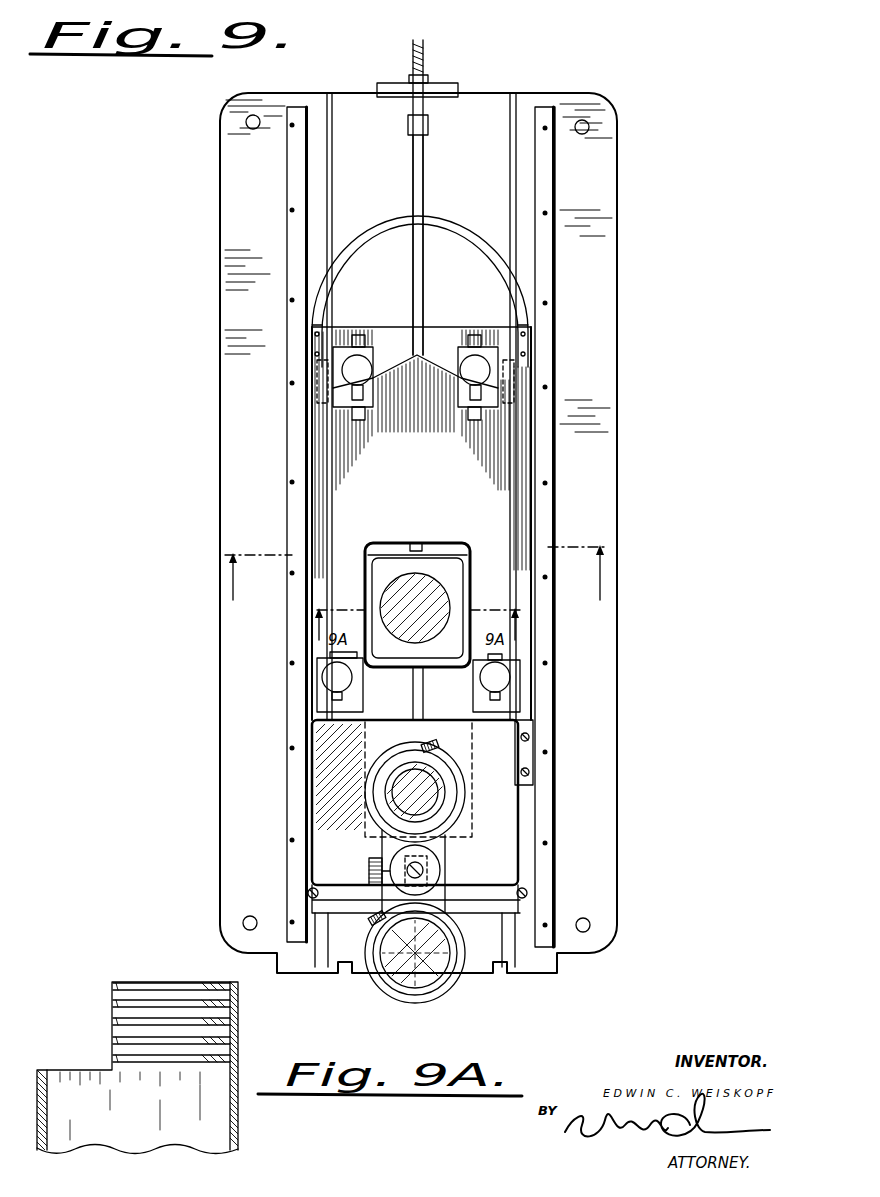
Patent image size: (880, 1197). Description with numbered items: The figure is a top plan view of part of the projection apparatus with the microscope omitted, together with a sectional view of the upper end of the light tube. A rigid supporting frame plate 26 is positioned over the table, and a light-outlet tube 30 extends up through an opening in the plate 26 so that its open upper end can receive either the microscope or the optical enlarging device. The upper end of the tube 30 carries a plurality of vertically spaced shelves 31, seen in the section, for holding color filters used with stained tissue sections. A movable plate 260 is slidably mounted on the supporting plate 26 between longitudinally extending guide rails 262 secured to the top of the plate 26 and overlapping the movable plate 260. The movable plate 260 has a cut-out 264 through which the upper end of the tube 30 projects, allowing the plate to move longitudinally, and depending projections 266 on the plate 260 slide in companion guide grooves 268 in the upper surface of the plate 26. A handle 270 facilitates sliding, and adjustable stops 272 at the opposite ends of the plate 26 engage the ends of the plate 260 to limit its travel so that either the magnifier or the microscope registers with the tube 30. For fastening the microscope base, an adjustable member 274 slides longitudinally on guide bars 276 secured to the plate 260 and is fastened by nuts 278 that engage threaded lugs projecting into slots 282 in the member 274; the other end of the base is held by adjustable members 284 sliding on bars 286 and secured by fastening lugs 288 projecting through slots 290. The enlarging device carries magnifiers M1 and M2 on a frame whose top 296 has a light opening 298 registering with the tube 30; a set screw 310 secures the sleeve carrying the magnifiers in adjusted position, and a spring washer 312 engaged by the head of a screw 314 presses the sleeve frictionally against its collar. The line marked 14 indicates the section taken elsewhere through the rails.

In FIG. 9, the supporting frame plate 26 is at (220, 208).
In FIG. 9, the guide rails 262 is at (290, 333).
In FIG. 9, the guide grooves 268 is at (340, 223).
In FIG. 9, the adjustable stops 272 is at (430, 123).
In FIG. 9, the handle 270 is at (502, 264).
In FIG. 9, the movable plate 260 is at (337, 447).
In FIG. 9, the adjustable member 274 is at (443, 363).
In FIG. 9, the slots 282 is at (353, 388).
In FIG. 9, the nuts 278 is at (360, 362).
In FIG. 9, the guide bars 276 is at (360, 420).
In FIG. 9, the depending projections 266 is at (305, 370).
In FIG. 9, the light-outlet tube 30 is at (380, 570).
In FIG. 9A, the light-outlet tube 30 is at (238, 1118).
In FIG. 9, the section line 14 is at (415, 575).
In FIG. 9, the adjustable members 284 is at (333, 695).
In FIG. 9, the bars 286 is at (333, 658).
In FIG. 9, the fastening lugs 288 is at (337, 677).
In FIG. 9, the slots 290 is at (363, 699).
In FIG. 9, the top of frame 296 is at (507, 792).
In FIG. 9, the cut-out 264 is at (362, 822).
In FIG. 9, the magnifier M1 is at (473, 815).
In FIG. 9, the light opening 298 is at (393, 790).
In FIG. 9, the spring washer 312 is at (442, 873).
In FIG. 9, the screw 314 is at (430, 850).
In FIG. 9, the set screw 310 is at (372, 872).
In FIG. 9, the magnifier M2 is at (433, 1005).
In FIG. 9A, the shelves 31 is at (113, 1053).